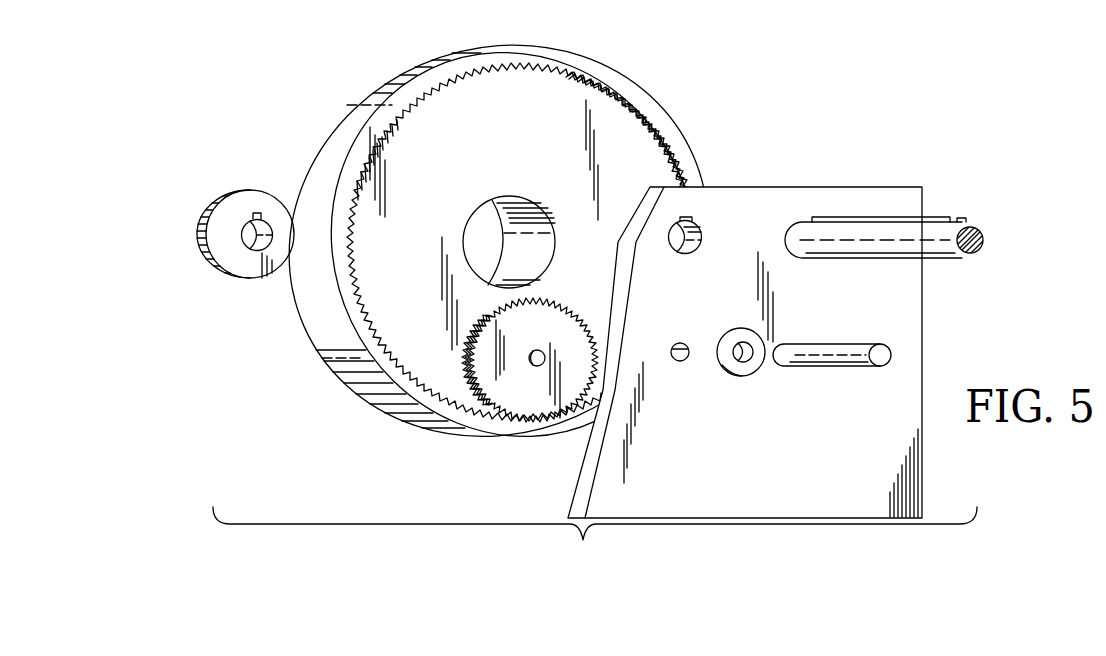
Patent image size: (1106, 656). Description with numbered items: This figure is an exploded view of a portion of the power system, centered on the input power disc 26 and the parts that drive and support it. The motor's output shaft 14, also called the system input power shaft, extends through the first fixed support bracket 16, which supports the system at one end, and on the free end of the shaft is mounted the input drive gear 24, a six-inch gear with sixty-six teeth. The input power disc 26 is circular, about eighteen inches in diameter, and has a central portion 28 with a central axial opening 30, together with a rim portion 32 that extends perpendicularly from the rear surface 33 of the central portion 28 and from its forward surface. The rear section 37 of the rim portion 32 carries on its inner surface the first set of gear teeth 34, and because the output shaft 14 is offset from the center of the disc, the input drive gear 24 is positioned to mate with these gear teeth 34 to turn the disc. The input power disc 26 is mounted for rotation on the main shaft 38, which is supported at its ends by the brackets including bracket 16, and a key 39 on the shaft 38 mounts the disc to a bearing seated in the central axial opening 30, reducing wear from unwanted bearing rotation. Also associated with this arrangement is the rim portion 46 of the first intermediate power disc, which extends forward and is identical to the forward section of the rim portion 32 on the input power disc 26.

The output shaft 14 is at (855, 363).
The first fixed support bracket 16 is at (905, 382).
The input drive gear 24 is at (553, 405).
The input power disc 26 is at (677, 127).
The central portion 28 is at (602, 115).
The central axial opening 30 is at (487, 230).
The rim portion 32 is at (518, 47).
The rear surface 33 is at (447, 199).
The first set of gear teeth 34 is at (515, 68).
The rear section 37 is at (582, 65).
The main shaft 38 is at (943, 237).
The key 39 is at (940, 213).
The rim portion 46 is at (255, 198).